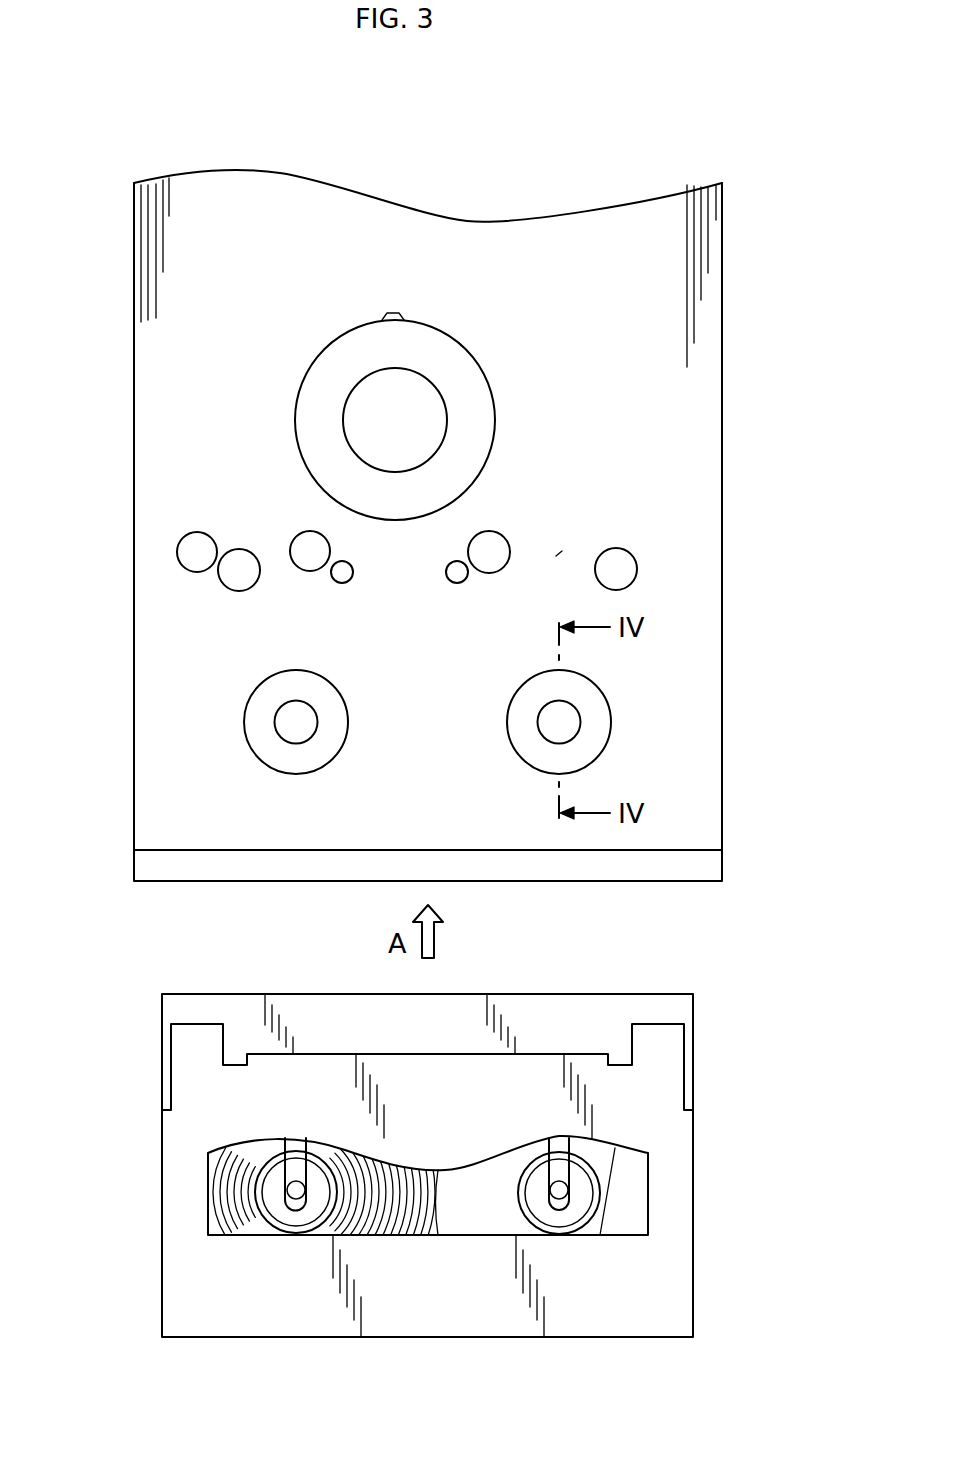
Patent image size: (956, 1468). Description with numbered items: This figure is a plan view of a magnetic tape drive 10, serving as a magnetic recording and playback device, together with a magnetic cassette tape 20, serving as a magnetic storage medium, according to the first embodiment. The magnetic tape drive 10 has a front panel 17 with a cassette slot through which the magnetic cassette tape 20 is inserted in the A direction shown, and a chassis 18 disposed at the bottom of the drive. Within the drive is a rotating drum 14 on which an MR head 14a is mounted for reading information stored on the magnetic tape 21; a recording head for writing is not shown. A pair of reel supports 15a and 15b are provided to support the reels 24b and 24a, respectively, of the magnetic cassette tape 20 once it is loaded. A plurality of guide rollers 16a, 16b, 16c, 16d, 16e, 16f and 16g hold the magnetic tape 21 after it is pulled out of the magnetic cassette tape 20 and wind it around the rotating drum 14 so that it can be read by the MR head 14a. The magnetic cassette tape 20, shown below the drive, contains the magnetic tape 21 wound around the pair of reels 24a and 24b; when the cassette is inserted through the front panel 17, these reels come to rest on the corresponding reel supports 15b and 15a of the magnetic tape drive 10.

The magnetic tape drive 10 is at (222, 153).
The rotating drum 14 is at (355, 347).
The MR head 14a is at (393, 314).
The reel support 15a is at (559, 723).
The reel support 15b is at (296, 722).
The guide roller 16a is at (617, 569).
The guide roller 16b is at (497, 552).
The guide roller 16c is at (457, 572).
The guide roller 16d is at (340, 574).
The guide roller 16e is at (290, 551).
The guide roller 16f is at (190, 547).
The guide roller 16g is at (238, 567).
The front panel 17 is at (706, 860).
The chassis 18 is at (706, 756).
The magnetic cassette tape 20 is at (655, 1090).
The magnetic tape 21 is at (560, 553).
The reel 24a is at (272, 1212).
The reel 24b is at (580, 1210).